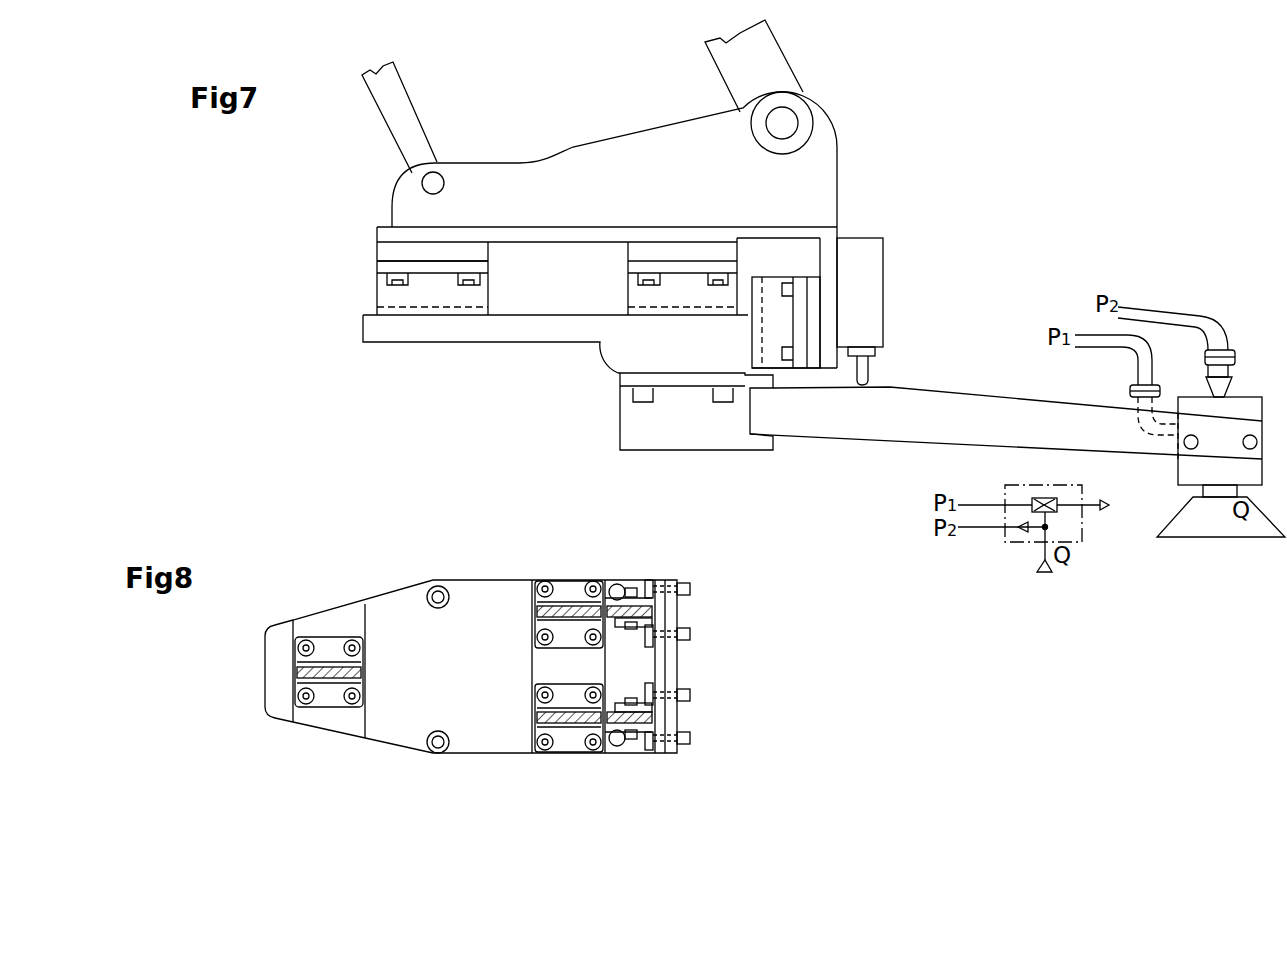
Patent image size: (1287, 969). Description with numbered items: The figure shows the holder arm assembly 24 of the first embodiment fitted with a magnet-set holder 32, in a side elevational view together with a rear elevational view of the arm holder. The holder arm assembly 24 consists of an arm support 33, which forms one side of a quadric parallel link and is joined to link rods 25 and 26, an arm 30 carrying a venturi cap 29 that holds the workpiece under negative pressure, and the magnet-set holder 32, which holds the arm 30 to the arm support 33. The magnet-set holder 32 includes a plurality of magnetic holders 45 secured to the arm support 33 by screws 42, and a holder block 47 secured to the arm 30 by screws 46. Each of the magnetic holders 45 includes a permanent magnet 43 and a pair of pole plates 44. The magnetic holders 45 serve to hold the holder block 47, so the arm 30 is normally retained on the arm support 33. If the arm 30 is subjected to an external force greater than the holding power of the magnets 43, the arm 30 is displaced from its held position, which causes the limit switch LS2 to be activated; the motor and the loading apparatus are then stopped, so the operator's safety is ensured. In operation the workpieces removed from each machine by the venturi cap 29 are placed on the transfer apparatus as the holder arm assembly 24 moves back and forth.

In FIG. 7, the holder arm assembly 24 is at (832, 120).
In FIG. 7, the link rod 25 is at (398, 100).
In FIG. 7, the link rod 26 is at (772, 55).
In FIG. 7, the venturi cap 29 is at (1232, 528).
In FIG. 7, the arm 30 is at (1002, 407).
In FIG. 7, the magnet-set holder 32 is at (445, 413).
In FIG. 7, the arm support 33 is at (568, 163).
In FIG. 8, the arm support 33 is at (493, 592).
In FIG. 7, the screws 42 is at (722, 278).
In FIG. 8, the screws 42 is at (293, 647).
In FIG. 8, the permanent magnet 43 is at (343, 673).
In FIG. 7, the pole plates 44 is at (432, 283).
In FIG. 8, the pole plates 44 is at (320, 667).
In FIG. 7, the magnetic holders 45 is at (683, 280).
In FIG. 8, the magnetic holders 45 is at (341, 657).
In FIG. 7, the screws 46 is at (638, 400).
In FIG. 7, the holder block 47 is at (505, 327).
In FIG. 7, the limit switch LS2 is at (875, 295).